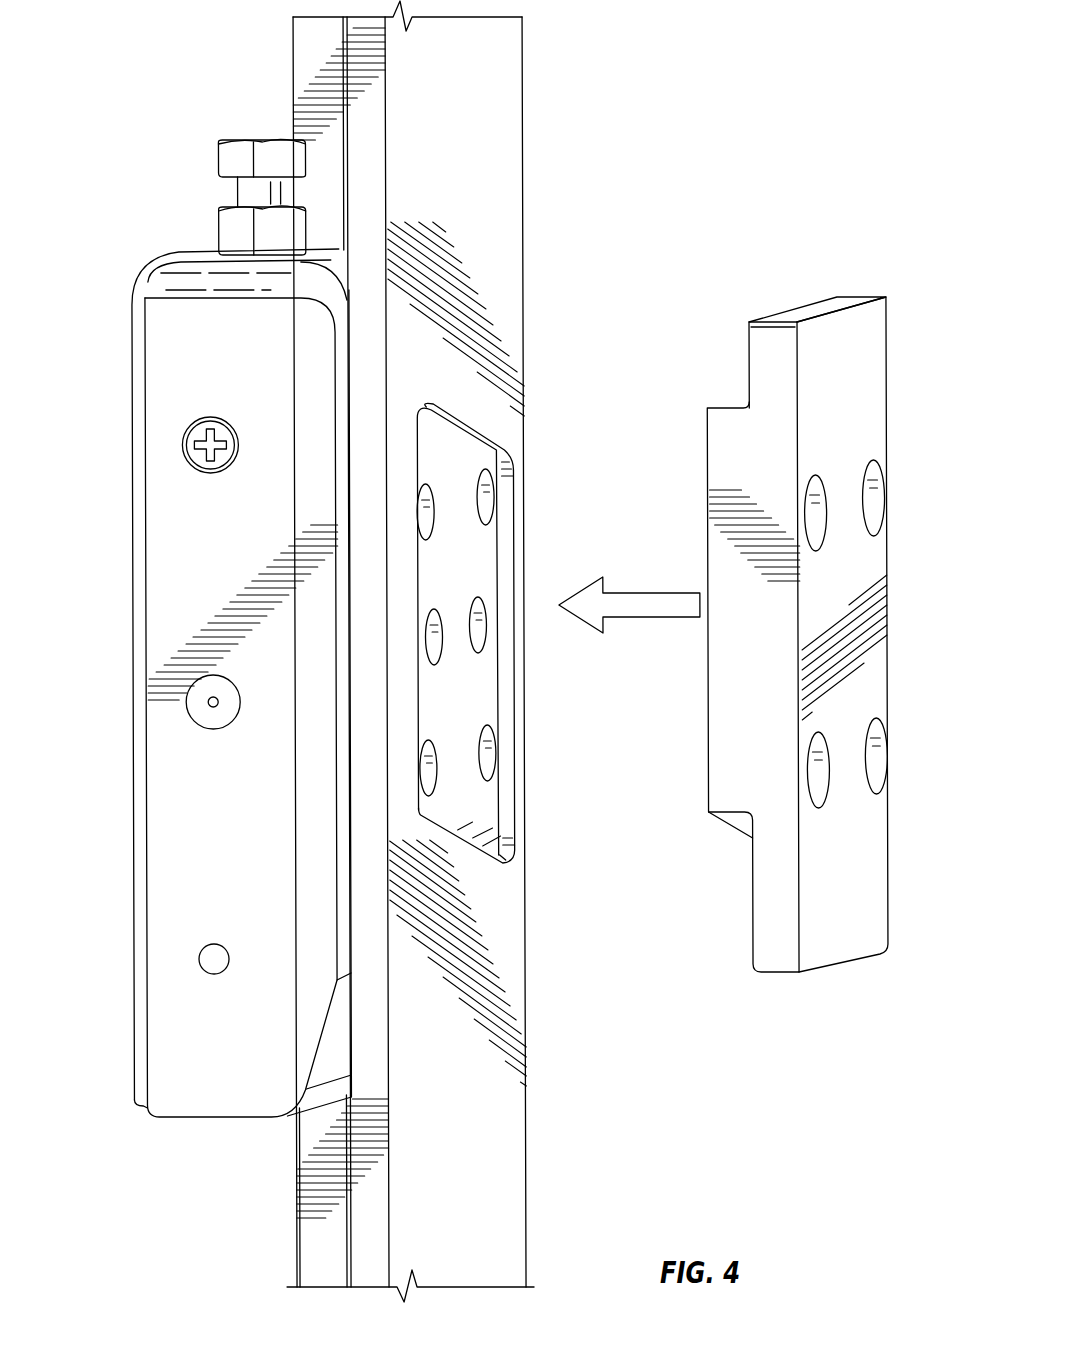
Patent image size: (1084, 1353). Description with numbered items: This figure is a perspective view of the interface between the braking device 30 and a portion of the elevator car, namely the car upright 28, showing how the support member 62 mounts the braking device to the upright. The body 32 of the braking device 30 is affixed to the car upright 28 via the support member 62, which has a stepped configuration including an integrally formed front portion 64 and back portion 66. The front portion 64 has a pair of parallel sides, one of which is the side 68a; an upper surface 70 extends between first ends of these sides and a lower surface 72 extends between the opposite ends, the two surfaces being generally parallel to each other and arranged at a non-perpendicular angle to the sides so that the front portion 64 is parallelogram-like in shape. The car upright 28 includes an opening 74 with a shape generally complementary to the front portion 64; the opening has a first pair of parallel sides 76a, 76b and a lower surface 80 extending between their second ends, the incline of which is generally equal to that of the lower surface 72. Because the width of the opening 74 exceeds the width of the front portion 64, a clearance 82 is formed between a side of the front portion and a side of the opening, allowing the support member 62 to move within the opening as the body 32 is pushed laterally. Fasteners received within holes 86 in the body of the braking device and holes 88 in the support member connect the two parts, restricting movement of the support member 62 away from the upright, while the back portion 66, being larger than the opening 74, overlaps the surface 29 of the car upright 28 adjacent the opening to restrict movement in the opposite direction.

The car upright 28 is at (443, 651).
The surface of the upright 29 is at (478, 197).
The braking device 30 is at (195, 700).
The body 32 is at (175, 835).
The support member 62 is at (804, 577).
The front portion 64 is at (795, 634).
The back portion 66 is at (875, 652).
The parallel side 68a is at (708, 500).
The upper surface 70 is at (733, 405).
The lower surface 72 is at (738, 822).
The opening 74 is at (433, 635).
The parallel side of opening 76a is at (418, 583).
The parallel side of opening 76b is at (505, 537).
The lower surface of opening 80 is at (513, 847).
The clearance 82 is at (460, 440).
The holes 86 is at (818, 783).
The holes 88 is at (487, 757).